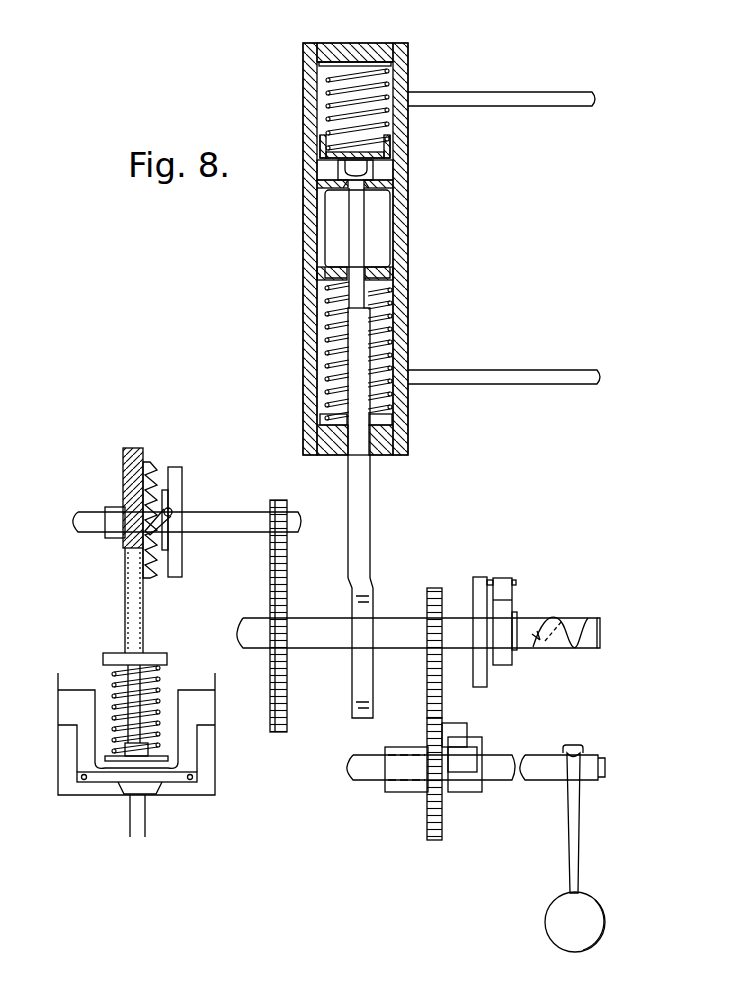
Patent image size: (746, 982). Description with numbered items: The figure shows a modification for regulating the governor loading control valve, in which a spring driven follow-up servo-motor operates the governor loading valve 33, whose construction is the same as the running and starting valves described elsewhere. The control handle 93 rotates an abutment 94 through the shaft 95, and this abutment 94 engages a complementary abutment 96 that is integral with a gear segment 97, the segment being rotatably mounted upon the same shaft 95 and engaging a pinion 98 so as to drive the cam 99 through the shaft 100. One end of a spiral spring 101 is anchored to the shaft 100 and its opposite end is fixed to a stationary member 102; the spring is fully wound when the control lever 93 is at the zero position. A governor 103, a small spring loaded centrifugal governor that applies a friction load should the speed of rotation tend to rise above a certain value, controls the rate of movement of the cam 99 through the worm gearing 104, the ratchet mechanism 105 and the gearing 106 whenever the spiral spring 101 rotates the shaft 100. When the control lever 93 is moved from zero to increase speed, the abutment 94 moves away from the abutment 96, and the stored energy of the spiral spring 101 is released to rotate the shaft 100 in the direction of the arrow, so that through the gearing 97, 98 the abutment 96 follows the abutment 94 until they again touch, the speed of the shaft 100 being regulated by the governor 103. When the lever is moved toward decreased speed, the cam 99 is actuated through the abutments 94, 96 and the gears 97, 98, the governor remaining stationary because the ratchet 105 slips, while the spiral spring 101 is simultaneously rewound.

The governor loading valve 33 is at (400, 243).
The control handle 93 is at (592, 922).
The abutment 94 is at (465, 763).
The shaft 95 is at (593, 765).
The complementary abutment 96 is at (457, 732).
The gear segment 97 is at (432, 813).
The pinion 98 is at (433, 612).
The cam 99 is at (367, 607).
The shaft 100 is at (565, 637).
The spiral spring 101 is at (506, 609).
The stationary member 102 is at (480, 577).
The governor 103 is at (112, 682).
The worm gearing 104 is at (130, 497).
The ratchet mechanism 105 is at (163, 500).
The gearing 106 is at (283, 713).